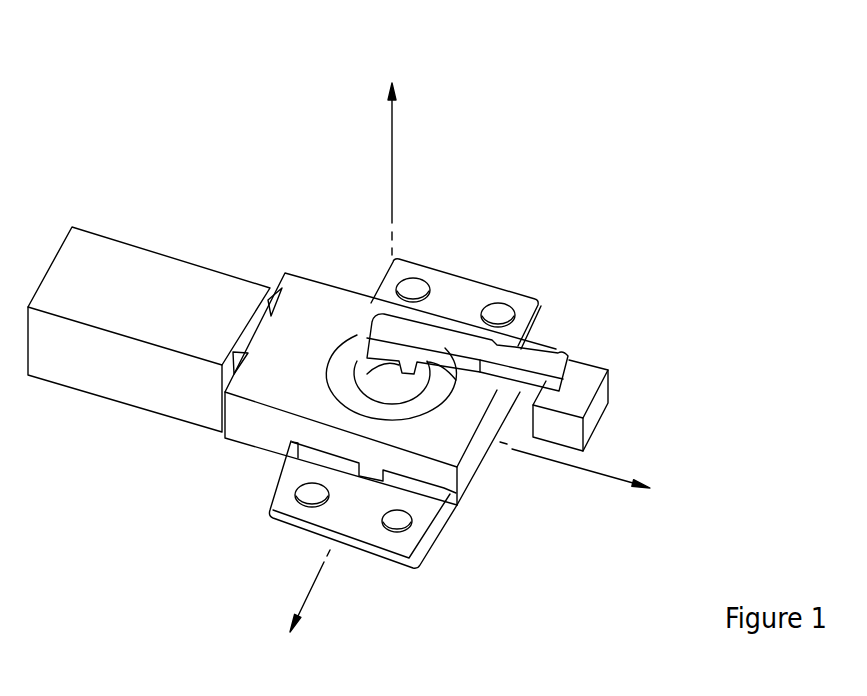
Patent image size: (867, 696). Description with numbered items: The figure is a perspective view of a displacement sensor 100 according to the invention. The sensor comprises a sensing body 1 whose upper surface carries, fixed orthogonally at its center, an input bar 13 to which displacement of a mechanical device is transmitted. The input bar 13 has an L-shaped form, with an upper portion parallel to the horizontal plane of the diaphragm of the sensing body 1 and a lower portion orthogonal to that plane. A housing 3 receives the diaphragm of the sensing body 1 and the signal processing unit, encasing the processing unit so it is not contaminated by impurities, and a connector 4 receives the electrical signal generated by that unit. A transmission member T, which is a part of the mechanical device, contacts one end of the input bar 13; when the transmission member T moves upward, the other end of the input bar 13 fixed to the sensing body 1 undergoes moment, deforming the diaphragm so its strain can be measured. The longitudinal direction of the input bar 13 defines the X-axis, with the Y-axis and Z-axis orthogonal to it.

The displacement sensor 100 is at (277, 163).
The sensing body 1 is at (356, 347).
The housing 3 is at (272, 405).
The connector 4 is at (128, 385).
The input bar 13 is at (447, 338).
The transmission member T is at (598, 410).